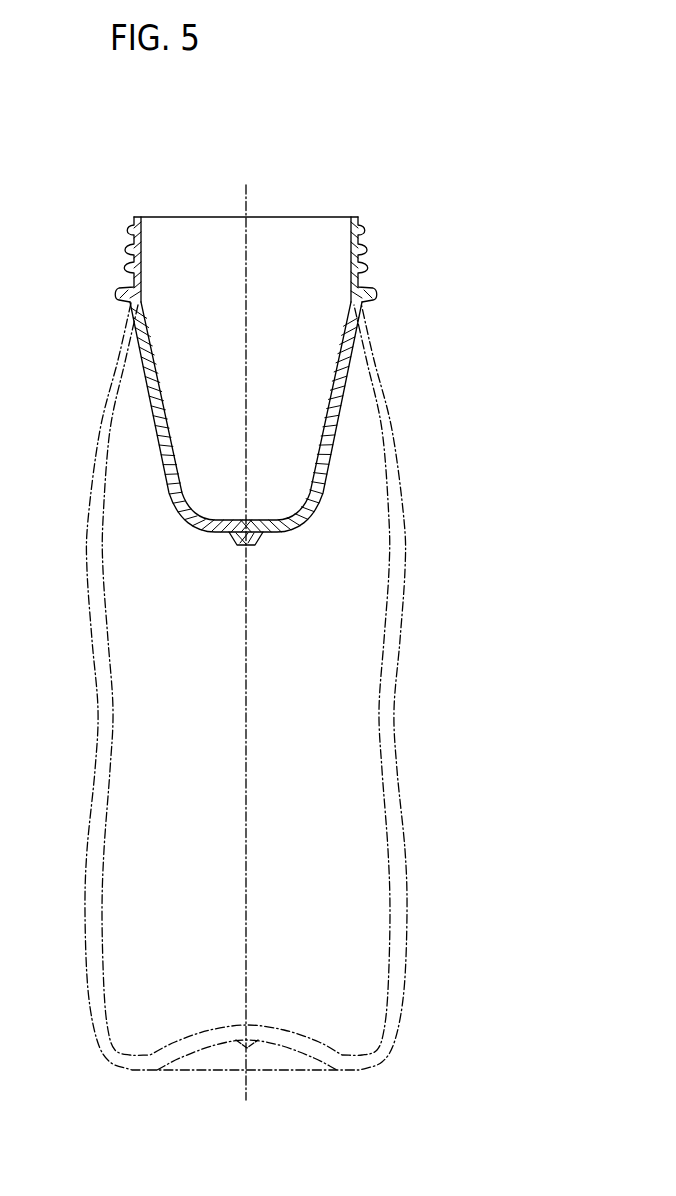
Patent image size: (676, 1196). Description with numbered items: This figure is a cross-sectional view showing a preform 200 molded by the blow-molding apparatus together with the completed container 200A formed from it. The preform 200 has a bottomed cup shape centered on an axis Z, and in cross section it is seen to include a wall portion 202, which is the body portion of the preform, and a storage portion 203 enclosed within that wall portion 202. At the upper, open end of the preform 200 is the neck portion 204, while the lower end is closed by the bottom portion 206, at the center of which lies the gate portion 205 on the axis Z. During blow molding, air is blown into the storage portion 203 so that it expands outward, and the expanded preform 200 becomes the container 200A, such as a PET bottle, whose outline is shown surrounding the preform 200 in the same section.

The preform 200 is at (253, 417).
The container 200A is at (404, 787).
The wall portion 202 is at (311, 417).
The storage portion 203 is at (330, 365).
The neck portion 204 is at (362, 237).
The gate portion 205 is at (255, 535).
The bottom portion 206 is at (346, 594).
The axis Z is at (247, 203).